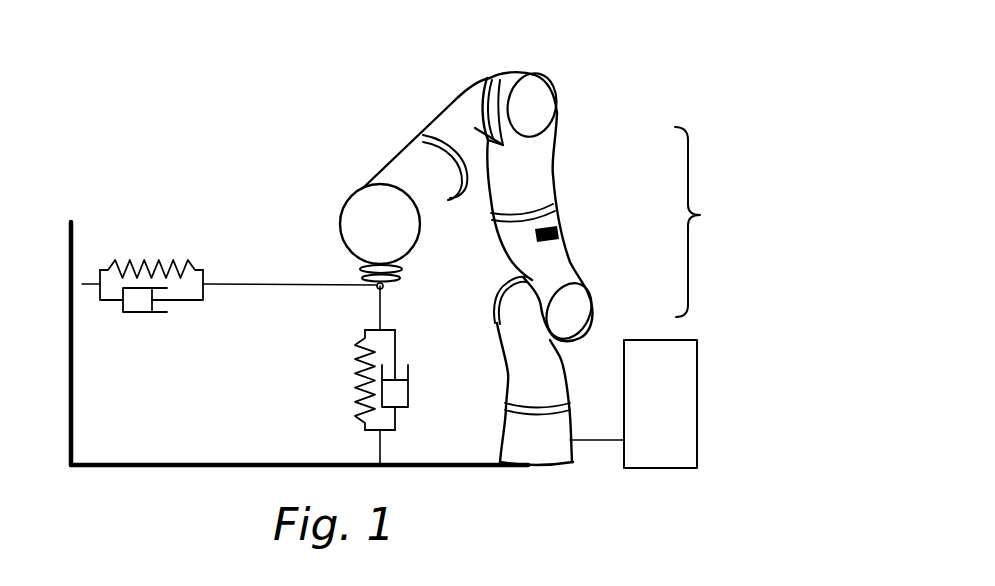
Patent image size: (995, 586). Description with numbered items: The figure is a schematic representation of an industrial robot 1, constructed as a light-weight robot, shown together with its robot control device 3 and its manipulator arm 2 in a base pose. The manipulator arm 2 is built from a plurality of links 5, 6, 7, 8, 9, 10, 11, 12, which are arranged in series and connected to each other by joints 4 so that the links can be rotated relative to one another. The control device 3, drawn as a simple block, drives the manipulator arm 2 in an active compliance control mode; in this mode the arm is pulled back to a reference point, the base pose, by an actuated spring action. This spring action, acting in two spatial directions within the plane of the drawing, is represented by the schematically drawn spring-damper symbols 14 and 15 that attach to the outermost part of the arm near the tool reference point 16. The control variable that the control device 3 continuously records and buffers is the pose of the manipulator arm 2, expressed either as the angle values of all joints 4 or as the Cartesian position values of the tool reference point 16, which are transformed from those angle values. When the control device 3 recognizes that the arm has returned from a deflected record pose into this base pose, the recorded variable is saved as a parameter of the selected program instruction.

The industrial robot 1 is at (696, 222).
The manipulator arm 2 is at (553, 170).
The robot control device 3 is at (662, 353).
The joints 4 is at (425, 133).
The link 5 is at (515, 438).
The link 6 is at (557, 375).
The link 7 is at (558, 253).
The link 8 is at (550, 165).
The link 9 is at (460, 117).
The link 10 is at (403, 170).
The link 11 is at (341, 232).
The link 12 is at (395, 280).
The spring-damper symbol 14 is at (148, 262).
The spring-damper symbol 15 is at (358, 395).
The tool reference point 16 is at (376, 288).